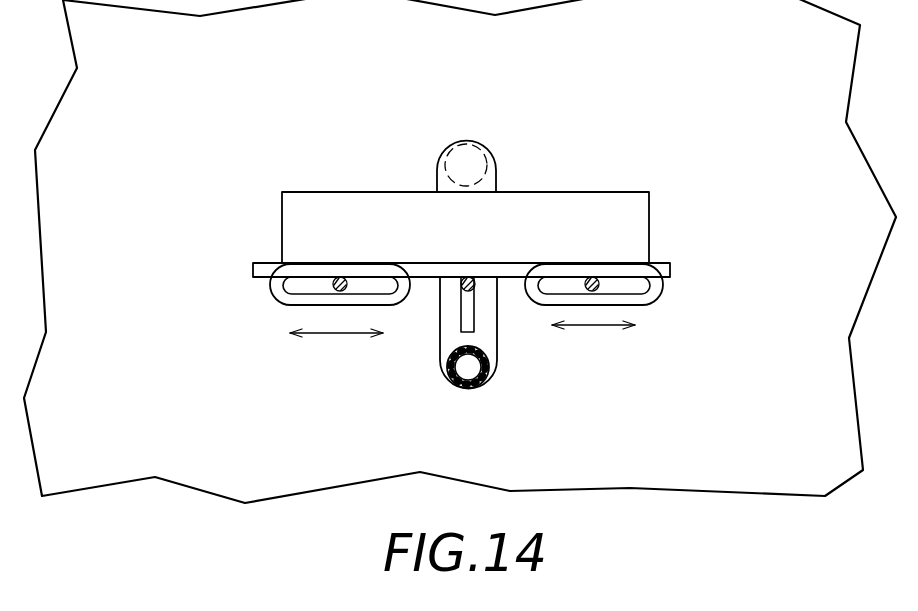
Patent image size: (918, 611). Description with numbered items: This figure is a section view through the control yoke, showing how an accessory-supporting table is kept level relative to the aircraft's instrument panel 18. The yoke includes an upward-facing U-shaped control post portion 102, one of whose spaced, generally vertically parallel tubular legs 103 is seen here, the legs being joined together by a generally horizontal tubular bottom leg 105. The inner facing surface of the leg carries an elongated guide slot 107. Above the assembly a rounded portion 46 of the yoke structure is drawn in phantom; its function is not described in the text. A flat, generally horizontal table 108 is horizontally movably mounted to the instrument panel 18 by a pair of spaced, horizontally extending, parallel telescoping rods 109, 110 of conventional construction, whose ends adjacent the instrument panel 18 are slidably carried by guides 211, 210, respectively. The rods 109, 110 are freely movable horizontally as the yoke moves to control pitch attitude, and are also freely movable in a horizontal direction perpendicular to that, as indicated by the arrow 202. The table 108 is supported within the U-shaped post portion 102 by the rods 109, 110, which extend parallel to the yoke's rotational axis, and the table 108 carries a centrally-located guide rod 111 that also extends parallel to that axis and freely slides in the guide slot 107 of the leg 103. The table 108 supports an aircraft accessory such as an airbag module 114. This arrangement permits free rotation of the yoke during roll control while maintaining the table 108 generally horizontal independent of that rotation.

The instrument panel 18 is at (199, 108).
The pivot arm boss 46 is at (457, 163).
The U-shaped control post portion 102 is at (450, 376).
The tubular leg 103 is at (474, 368).
The tubular bottom leg 105 is at (485, 385).
The guide slot 107 is at (467, 318).
The table 108 is at (672, 271).
The telescoping rod 109 is at (592, 280).
The telescoping rod 110 is at (340, 280).
The guide rod 111 is at (452, 286).
The airbag module 114 is at (627, 217).
The arrow 202 is at (330, 334).
The guide 210 is at (272, 302).
The guide 211 is at (652, 298).